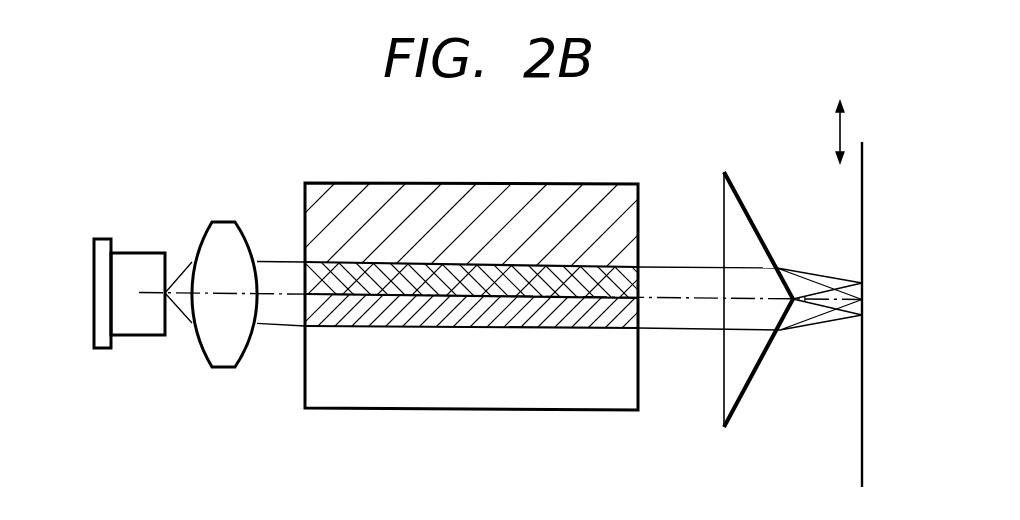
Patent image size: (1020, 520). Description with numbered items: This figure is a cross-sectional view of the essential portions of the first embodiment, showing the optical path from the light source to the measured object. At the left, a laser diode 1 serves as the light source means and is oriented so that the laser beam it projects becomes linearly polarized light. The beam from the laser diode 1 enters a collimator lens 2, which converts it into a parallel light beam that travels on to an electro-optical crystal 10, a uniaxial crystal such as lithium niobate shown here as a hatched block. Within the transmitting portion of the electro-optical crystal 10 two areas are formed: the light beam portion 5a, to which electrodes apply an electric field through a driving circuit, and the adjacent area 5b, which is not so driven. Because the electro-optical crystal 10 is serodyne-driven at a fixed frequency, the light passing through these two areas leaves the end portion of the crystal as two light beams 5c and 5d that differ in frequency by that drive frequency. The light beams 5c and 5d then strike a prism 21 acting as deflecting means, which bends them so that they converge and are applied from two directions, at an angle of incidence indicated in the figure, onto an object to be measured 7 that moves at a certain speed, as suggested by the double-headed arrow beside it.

The laser diode 1 is at (146, 340).
The collimator lens 2 is at (243, 345).
The electro-optical crystal 10 is at (455, 190).
The light beam portion 5a is at (541, 272).
The area 5b is at (548, 328).
The light beam 5c is at (682, 278).
The light beam 5d is at (681, 321).
The prism 21 is at (745, 218).
The object to be measured 7 is at (868, 163).